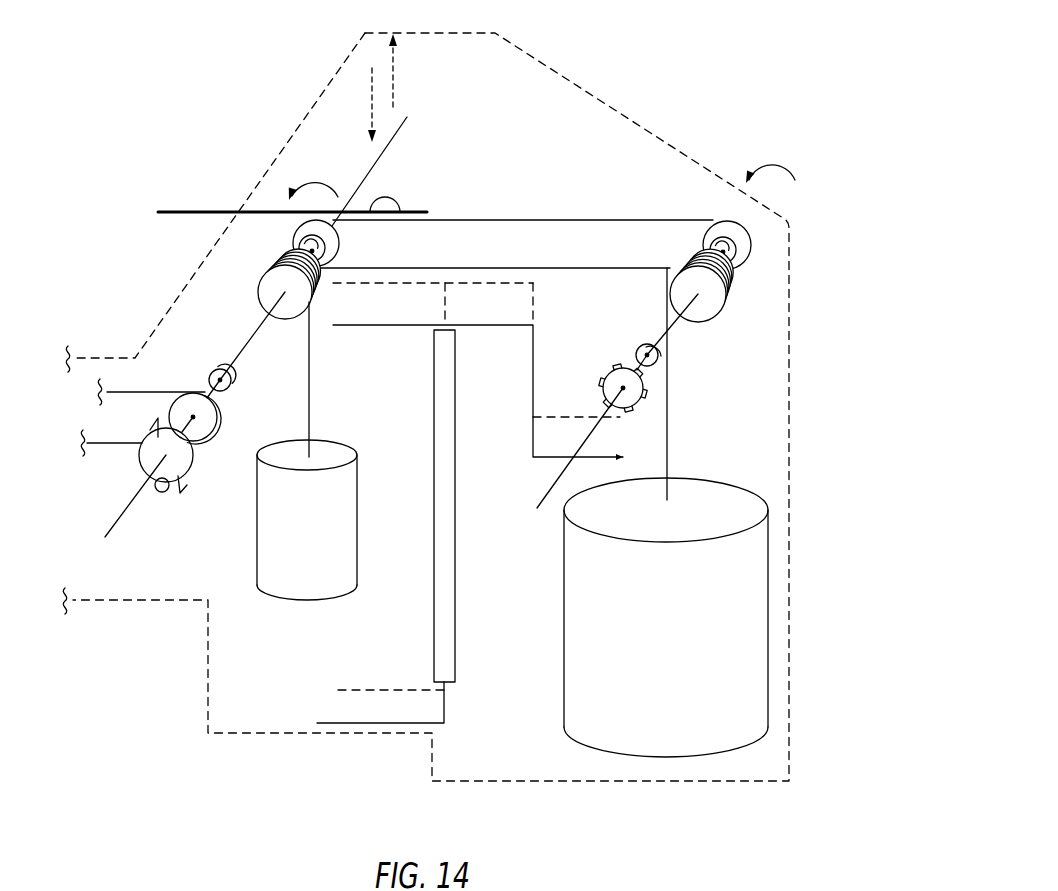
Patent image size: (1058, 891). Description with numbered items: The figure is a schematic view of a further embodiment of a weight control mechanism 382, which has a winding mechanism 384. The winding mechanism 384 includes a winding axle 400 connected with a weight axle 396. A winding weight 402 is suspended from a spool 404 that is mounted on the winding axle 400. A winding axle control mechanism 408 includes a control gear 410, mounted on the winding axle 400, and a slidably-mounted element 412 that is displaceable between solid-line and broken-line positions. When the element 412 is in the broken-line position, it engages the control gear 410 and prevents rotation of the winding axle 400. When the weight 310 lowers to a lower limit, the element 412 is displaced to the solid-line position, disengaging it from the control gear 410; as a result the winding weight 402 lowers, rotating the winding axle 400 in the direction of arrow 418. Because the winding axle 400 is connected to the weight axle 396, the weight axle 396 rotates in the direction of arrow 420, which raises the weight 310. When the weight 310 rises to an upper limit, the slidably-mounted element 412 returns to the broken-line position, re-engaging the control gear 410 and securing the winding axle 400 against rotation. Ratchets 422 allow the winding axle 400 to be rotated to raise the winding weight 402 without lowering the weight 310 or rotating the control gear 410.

The weight 310 is at (344, 515).
The weight control mechanism 382 is at (825, 303).
The winding mechanism 384 is at (755, 468).
The weight axle 396 is at (380, 161).
The winding axle 400 is at (745, 226).
The winding weight 402 is at (770, 568).
The spool 404 is at (680, 290).
The winding axle control mechanism 408 is at (492, 660).
The control gear 410 is at (646, 389).
The slidably-mounted element 412 is at (487, 328).
The arrow 418 is at (771, 163).
The arrow 420 is at (323, 182).
The ratchets 422 is at (300, 237).